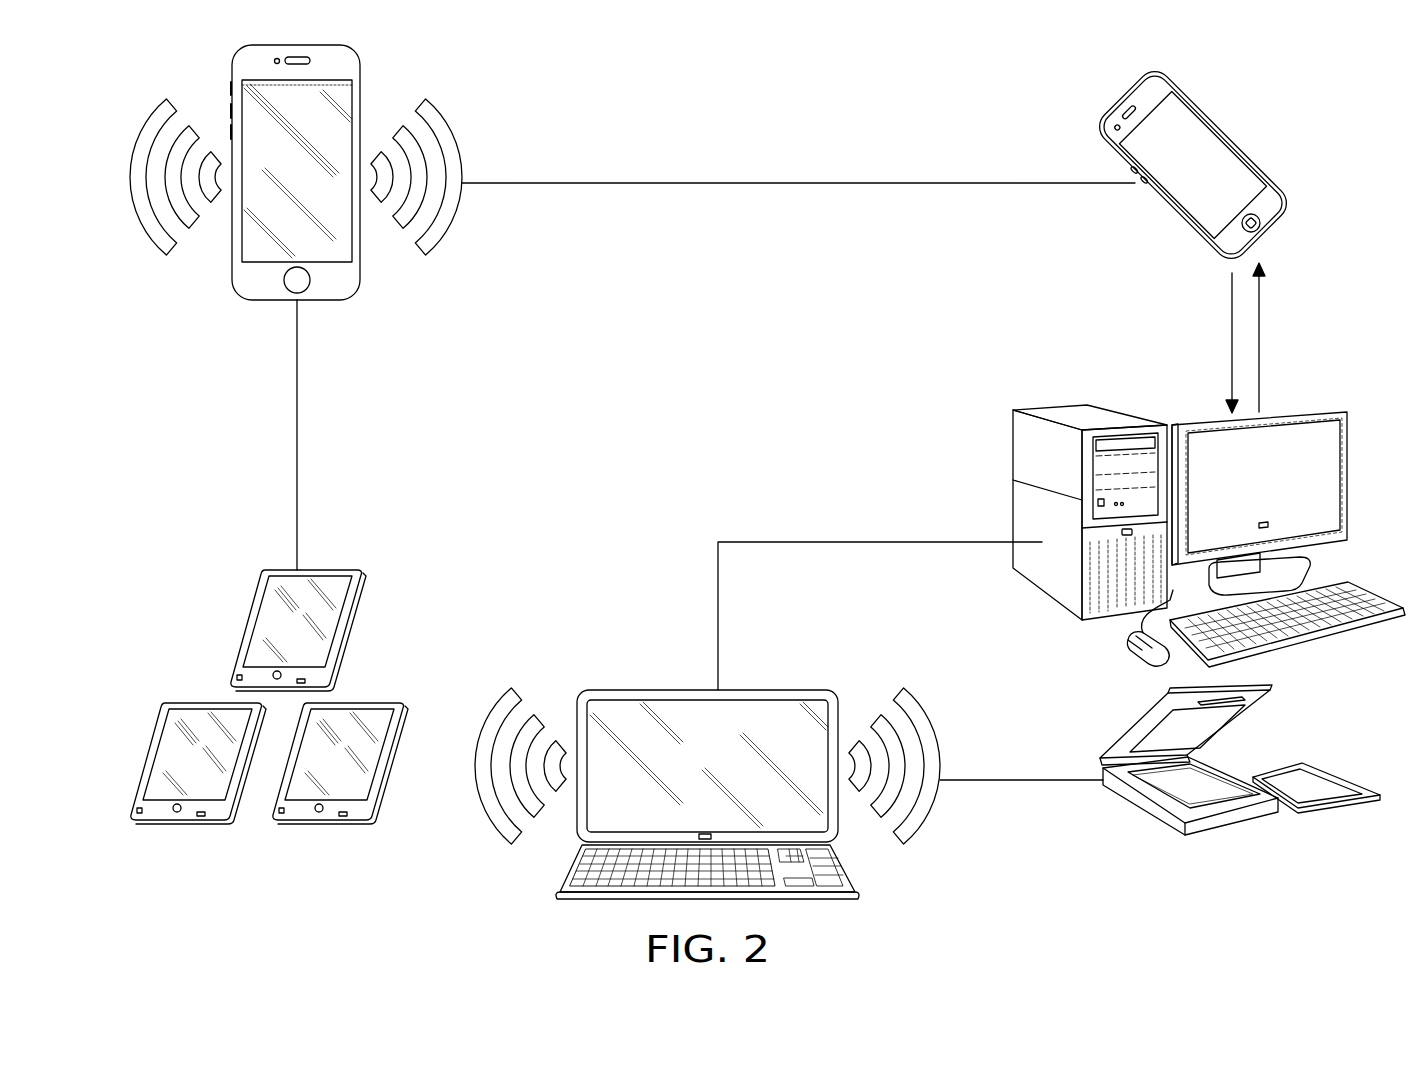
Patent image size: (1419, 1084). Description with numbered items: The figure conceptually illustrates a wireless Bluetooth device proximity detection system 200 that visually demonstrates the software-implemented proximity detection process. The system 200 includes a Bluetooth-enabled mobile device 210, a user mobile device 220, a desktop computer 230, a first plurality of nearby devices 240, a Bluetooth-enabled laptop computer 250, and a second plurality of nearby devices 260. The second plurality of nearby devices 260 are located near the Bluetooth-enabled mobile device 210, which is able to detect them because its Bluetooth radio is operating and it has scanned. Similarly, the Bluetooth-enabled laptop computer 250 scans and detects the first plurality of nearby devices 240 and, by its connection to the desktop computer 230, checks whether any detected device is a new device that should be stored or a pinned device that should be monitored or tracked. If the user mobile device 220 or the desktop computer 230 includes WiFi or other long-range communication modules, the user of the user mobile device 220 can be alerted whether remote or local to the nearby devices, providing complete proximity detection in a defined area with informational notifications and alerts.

The wireless Bluetooth device proximity detection system 200 is at (738, 120).
The Bluetooth-enabled mobile device 210 is at (347, 301).
The user mobile device 220 is at (1242, 148).
The desktop computer 230 is at (1305, 410).
The first plurality of nearby devices 240 is at (1313, 813).
The Bluetooth-enabled laptop computer 250 is at (660, 690).
The second plurality of nearby devices 260 is at (285, 663).